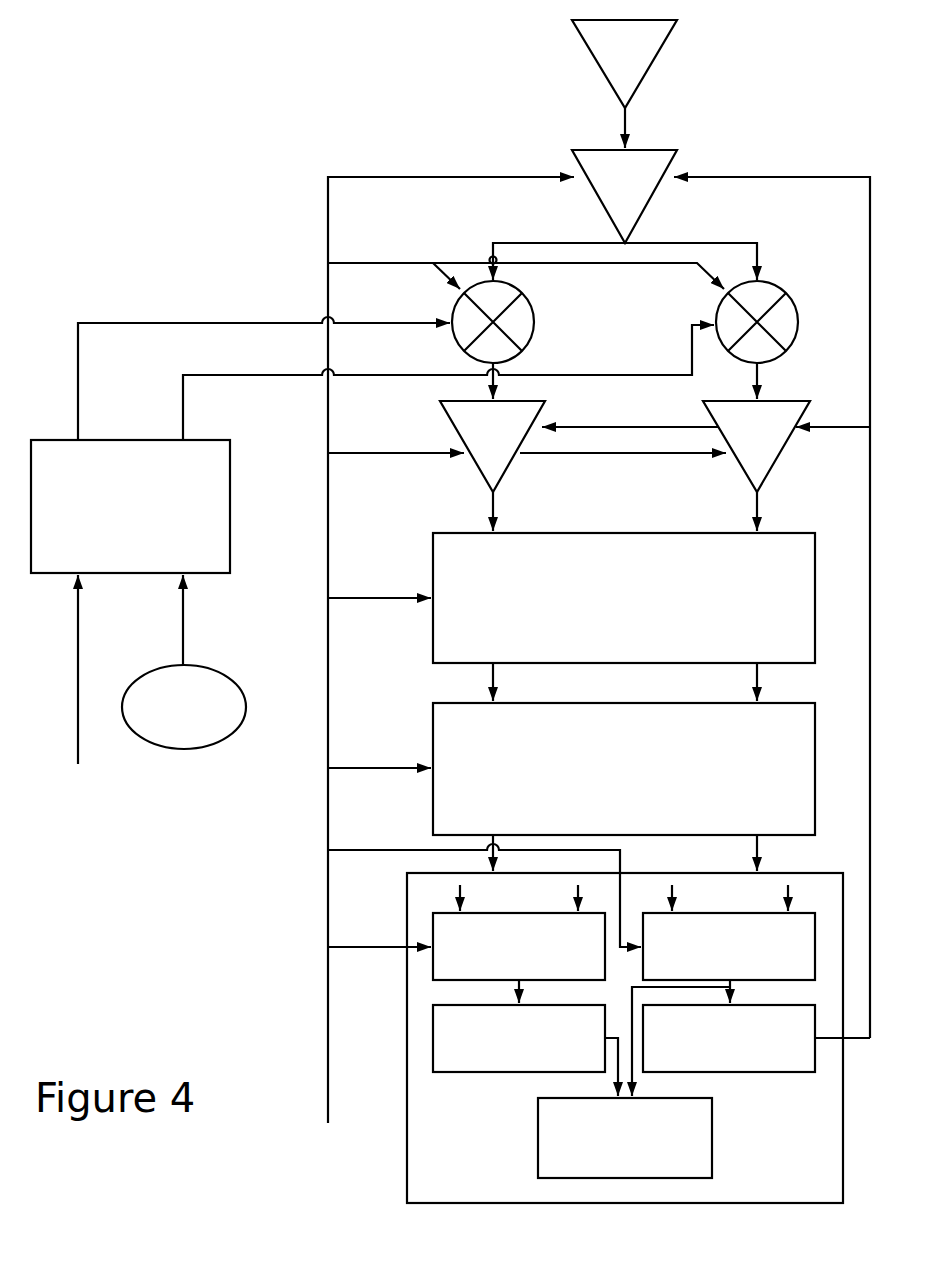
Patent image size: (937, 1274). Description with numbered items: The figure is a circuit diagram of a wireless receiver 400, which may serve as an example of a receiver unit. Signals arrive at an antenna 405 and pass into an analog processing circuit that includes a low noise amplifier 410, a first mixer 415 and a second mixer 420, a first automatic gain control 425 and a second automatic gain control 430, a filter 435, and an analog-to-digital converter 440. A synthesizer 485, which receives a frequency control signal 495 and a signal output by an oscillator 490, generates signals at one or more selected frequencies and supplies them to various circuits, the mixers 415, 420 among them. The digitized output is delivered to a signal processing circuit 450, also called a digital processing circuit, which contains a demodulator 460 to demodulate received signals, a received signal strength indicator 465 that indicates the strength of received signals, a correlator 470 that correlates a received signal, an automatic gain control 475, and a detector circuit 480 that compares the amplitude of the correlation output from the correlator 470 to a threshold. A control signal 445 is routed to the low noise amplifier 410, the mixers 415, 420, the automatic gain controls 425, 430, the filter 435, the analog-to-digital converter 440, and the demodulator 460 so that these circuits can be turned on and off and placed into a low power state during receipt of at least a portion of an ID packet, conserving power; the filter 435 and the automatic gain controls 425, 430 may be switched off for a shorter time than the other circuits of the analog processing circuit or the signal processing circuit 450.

The wireless receiver 400 is at (206, 204).
The antenna 405 is at (620, 100).
The low noise amplifier 410 is at (675, 150).
The first mixer 415 is at (535, 330).
The second mixer 420 is at (790, 292).
The first automatic gain control 425 is at (456, 433).
The second automatic gain control 430 is at (718, 428).
The filter 435 is at (628, 533).
The analog-to-digital converter 440 is at (433, 745).
The control signal 445 is at (318, 1047).
The signal processing circuit 450 is at (407, 1040).
The demodulator 460 is at (540, 913).
The received signal strength indicator 465 is at (750, 913).
The correlator 470 is at (518, 1072).
The automatic gain control 475 is at (728, 1072).
The detector circuit 480 is at (538, 1170).
The synthesizer 485 is at (230, 478).
The oscillator 490 is at (238, 683).
The frequency control signal 495 is at (78, 812).